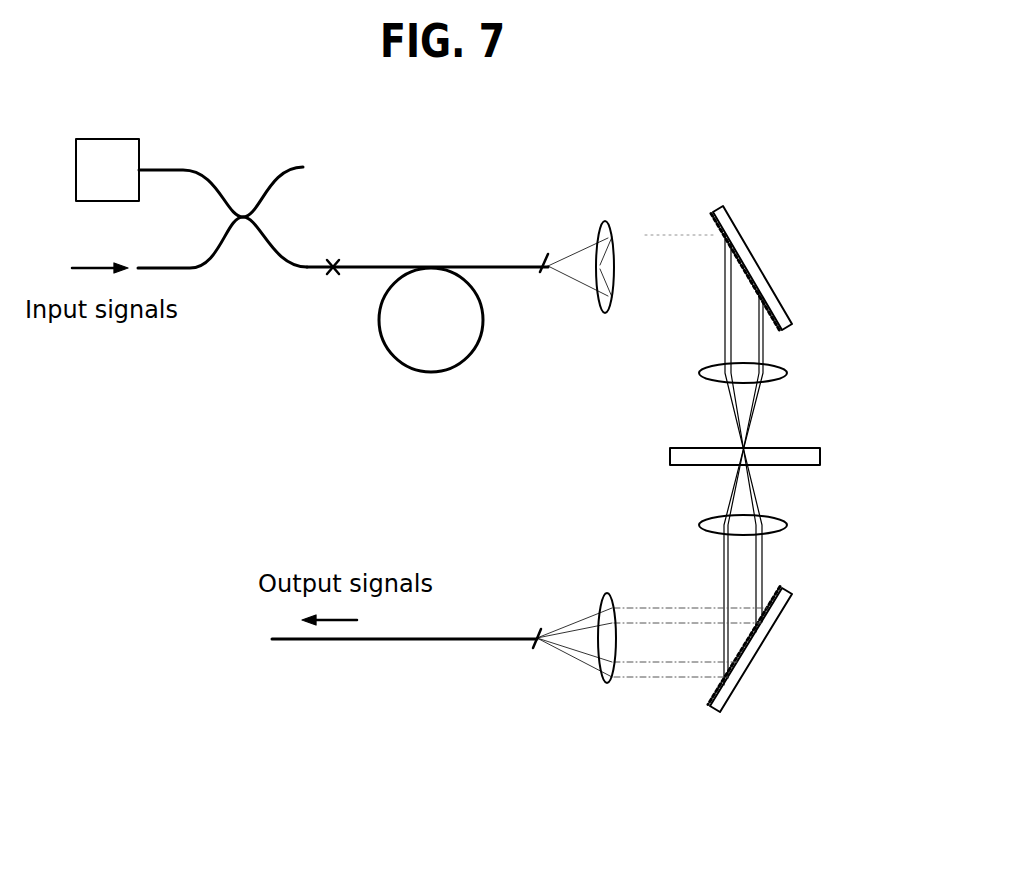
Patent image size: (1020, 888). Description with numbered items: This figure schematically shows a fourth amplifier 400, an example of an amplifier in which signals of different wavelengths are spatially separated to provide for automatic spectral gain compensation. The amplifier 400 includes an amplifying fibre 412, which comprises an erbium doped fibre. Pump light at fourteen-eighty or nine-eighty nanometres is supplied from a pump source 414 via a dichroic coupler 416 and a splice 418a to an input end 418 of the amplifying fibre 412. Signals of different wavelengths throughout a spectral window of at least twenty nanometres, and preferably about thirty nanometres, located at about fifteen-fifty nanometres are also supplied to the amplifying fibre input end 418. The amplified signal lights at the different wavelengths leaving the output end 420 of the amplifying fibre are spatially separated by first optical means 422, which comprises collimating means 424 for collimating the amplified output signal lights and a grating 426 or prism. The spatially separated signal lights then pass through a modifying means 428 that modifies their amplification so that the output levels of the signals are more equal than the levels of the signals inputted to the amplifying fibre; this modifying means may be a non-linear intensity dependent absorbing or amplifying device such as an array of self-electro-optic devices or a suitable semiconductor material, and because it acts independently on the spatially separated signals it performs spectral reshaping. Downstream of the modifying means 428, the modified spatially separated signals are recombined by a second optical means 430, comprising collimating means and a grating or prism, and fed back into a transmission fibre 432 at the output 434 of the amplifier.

The amplifier 400 is at (585, 147).
The amplifying fibre 412 is at (490, 269).
The pump source 414 is at (102, 190).
The dichroic coupler 416 is at (245, 212).
The input end 418 is at (337, 272).
The splice 418a is at (335, 258).
The output end 420 is at (540, 262).
The first optical means 422 is at (816, 232).
The collimating means 424 is at (583, 322).
The grating 426 is at (796, 307).
The modifying means 428 is at (640, 457).
The second optical means 430 is at (790, 652).
The transmission fibre 432 is at (318, 641).
The output 434 is at (527, 645).